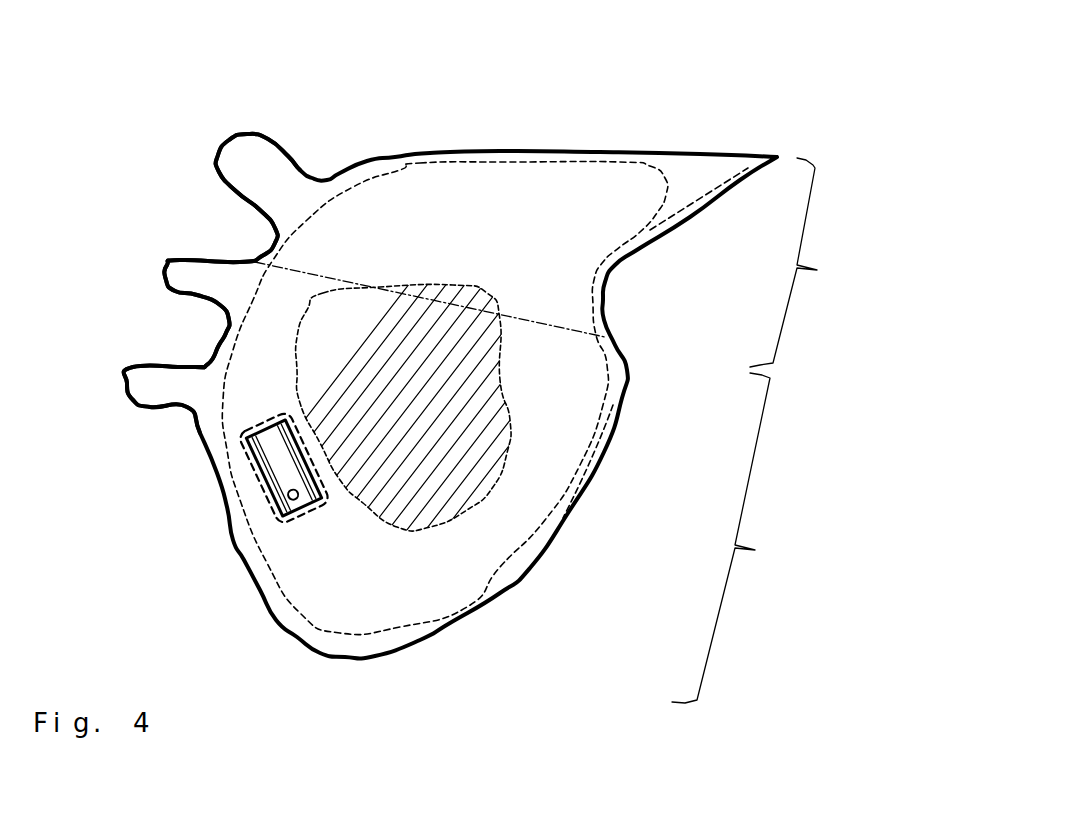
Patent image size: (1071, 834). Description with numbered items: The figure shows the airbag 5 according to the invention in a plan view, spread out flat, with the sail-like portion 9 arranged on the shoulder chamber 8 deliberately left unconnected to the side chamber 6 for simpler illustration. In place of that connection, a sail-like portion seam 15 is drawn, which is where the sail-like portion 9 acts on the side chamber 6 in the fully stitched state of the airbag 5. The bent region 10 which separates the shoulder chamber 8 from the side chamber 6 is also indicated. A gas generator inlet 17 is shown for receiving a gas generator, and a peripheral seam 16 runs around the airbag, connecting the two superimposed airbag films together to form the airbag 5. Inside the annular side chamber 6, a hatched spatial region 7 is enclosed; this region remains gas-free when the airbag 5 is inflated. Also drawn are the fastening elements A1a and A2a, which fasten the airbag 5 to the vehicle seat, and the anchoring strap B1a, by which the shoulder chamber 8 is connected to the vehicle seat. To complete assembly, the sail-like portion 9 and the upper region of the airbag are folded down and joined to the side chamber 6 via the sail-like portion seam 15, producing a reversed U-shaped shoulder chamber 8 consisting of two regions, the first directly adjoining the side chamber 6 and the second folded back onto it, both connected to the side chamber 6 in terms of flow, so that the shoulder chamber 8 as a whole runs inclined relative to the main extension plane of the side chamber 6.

The airbag 5 is at (840, 99).
The side chamber 6 is at (726, 538).
The spatial region 7 is at (463, 479).
The shoulder chamber 8 is at (796, 262).
The sail-like portion 9 is at (716, 201).
The bent region 10 is at (355, 240).
The sail-like portion seam 15 is at (640, 420).
The peripheral seam 16 is at (445, 360).
The gas generator inlet 17 is at (231, 502).
The fastening element A1a is at (143, 377).
The fastening element A2a is at (170, 290).
The anchoring strap B1a is at (212, 183).